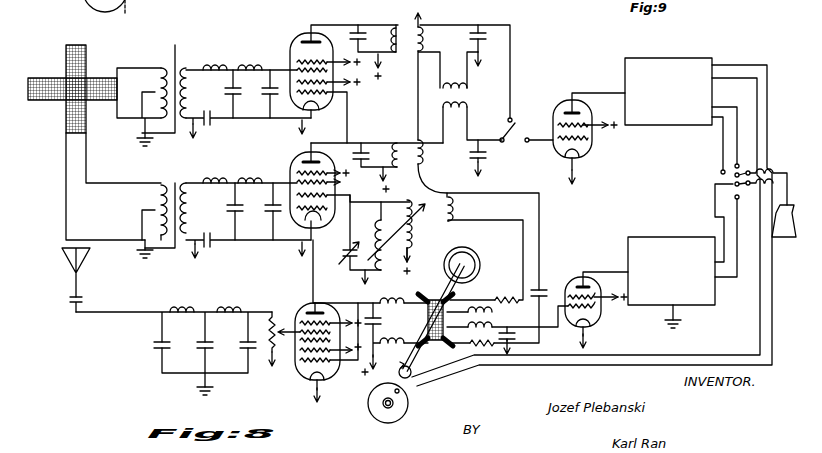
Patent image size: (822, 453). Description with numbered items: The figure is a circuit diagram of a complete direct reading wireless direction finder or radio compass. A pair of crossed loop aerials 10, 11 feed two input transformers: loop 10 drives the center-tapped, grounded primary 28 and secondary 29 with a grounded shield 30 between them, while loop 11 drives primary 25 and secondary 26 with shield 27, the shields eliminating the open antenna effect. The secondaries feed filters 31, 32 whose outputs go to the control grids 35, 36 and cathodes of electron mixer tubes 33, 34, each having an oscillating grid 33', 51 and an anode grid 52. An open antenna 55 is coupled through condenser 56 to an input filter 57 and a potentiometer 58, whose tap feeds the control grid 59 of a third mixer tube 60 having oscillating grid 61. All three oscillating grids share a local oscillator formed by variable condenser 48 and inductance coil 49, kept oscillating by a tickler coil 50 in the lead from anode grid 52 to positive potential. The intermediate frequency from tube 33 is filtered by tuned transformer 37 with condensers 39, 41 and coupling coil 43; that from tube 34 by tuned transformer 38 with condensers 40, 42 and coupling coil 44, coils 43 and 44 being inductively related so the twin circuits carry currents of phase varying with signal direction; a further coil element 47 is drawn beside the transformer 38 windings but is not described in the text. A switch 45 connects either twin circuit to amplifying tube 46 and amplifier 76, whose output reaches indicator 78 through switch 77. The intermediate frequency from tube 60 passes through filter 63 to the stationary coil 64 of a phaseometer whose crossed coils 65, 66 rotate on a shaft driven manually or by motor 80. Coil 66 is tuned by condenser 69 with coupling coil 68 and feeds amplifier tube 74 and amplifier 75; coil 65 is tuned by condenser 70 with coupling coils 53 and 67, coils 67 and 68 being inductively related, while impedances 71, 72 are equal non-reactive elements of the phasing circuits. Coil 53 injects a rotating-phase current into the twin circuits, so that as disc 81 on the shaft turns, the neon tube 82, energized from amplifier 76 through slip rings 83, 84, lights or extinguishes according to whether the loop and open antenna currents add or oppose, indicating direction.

The loop aerial 10 is at (78, 46).
The loop aerial 11 is at (48, 100).
The primary 25 is at (160, 68).
The secondary 26 is at (195, 68).
The shield 27 is at (176, 50).
The primary 28 is at (155, 199).
The secondary 29 is at (188, 183).
The shield 30 is at (175, 183).
The filter 31 is at (251, 94).
The filter 32 is at (254, 211).
The modulating or electron mixer tube 33 is at (337, 63).
The oscillating grid 33' is at (322, 116).
The modulating or electron mixer tube 34 is at (298, 160).
The control grid 35 is at (298, 64).
The control grid 36 is at (298, 178).
The tuned transformer 37 is at (406, 26).
The tuned transformer 38 is at (416, 120).
The tuning condenser 39 is at (362, 30).
The tuning condenser 40 is at (363, 148).
The tuning condenser 41 is at (478, 30).
The tuning condenser 42 is at (485, 155).
The coupling coil 43 is at (467, 89).
The coupling coil 44 is at (467, 108).
The switch 45 is at (514, 131).
The amplifying tube 46 is at (592, 150).
The coupling coil 47 is at (372, 196).
The variable condenser 48 is at (343, 262).
The inductance coil 49 is at (396, 236).
The feedback or tickler coil 50 is at (414, 243).
The oscillating grid 51 is at (306, 214).
The anode grid 52 is at (324, 193).
The coupling coil 53 is at (457, 215).
The open antenna 55 is at (62, 252).
The coupling condenser 56 is at (74, 309).
The input filter 57 is at (174, 343).
The potentiometer 58 is at (273, 312).
The control grid 59 is at (313, 292).
The mixer tube 60 is at (298, 375).
The oscillating grid 61 is at (336, 375).
The filter 63 is at (395, 339).
The stationary inductance coil 64 is at (432, 299).
The crossed coil 65 is at (476, 290).
The crossed coil 66 is at (410, 303).
The coupling coil 67 is at (492, 312).
The coupling coil 68 is at (492, 327).
The condenser 69 is at (513, 336).
The condenser 70 is at (544, 291).
The non-reactive impedance 71 is at (505, 299).
The non-reactive impedance 72 is at (487, 347).
The amplifier tube 74 is at (601, 325).
The amplifier 75 is at (652, 237).
The amplifier 76 is at (664, 58).
The switch 77 is at (735, 177).
The indicator 78 is at (773, 215).
The motor 80 is at (470, 257).
The disc 81 is at (380, 418).
The neon tube 82 is at (383, 404).
The slip ring 83 is at (410, 380).
The slip ring 84 is at (398, 364).